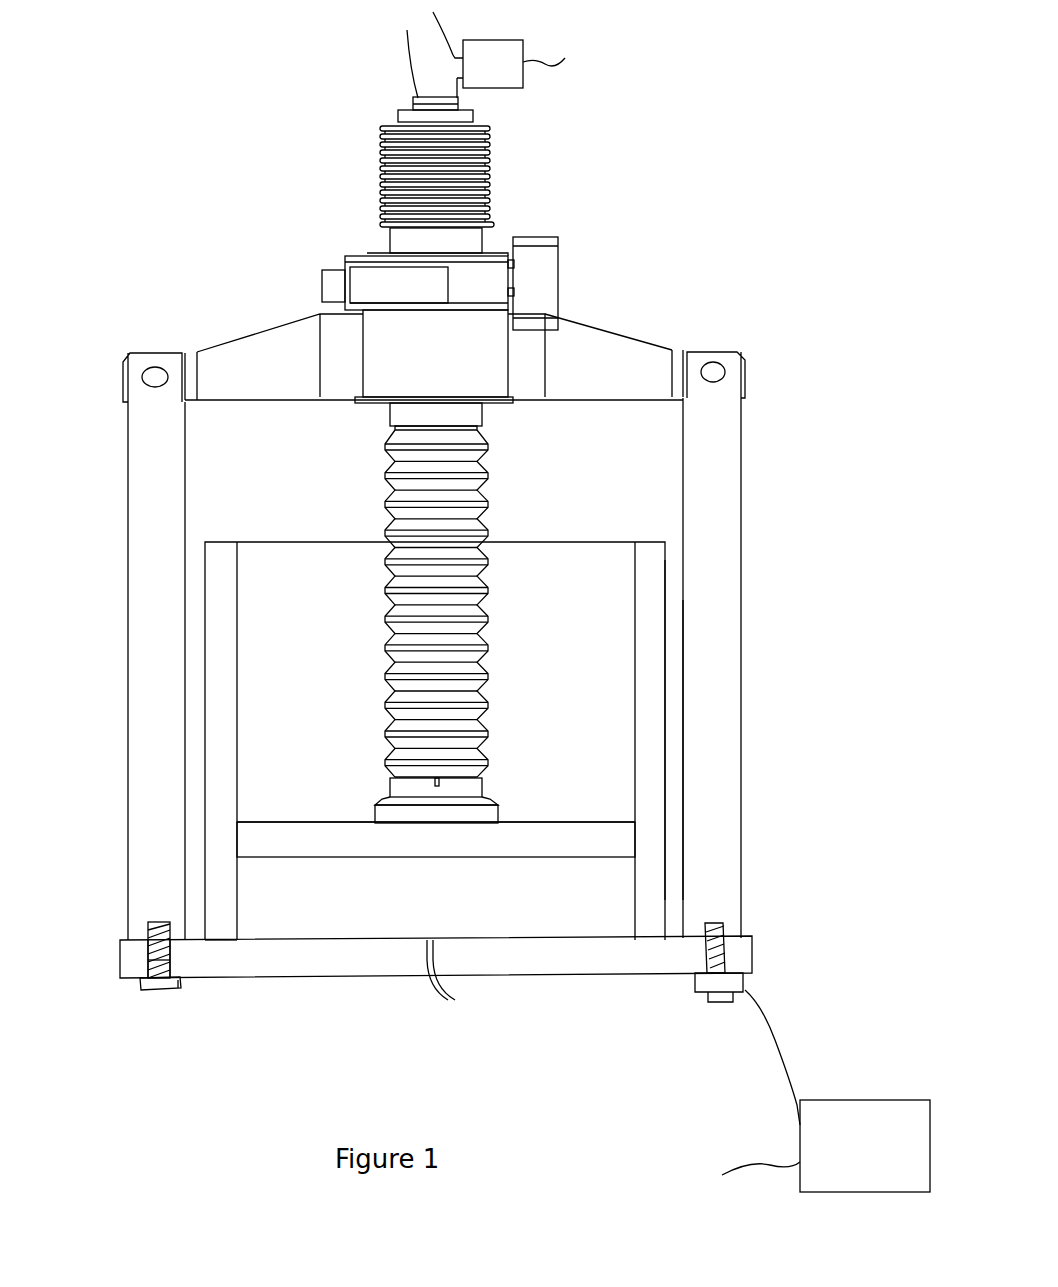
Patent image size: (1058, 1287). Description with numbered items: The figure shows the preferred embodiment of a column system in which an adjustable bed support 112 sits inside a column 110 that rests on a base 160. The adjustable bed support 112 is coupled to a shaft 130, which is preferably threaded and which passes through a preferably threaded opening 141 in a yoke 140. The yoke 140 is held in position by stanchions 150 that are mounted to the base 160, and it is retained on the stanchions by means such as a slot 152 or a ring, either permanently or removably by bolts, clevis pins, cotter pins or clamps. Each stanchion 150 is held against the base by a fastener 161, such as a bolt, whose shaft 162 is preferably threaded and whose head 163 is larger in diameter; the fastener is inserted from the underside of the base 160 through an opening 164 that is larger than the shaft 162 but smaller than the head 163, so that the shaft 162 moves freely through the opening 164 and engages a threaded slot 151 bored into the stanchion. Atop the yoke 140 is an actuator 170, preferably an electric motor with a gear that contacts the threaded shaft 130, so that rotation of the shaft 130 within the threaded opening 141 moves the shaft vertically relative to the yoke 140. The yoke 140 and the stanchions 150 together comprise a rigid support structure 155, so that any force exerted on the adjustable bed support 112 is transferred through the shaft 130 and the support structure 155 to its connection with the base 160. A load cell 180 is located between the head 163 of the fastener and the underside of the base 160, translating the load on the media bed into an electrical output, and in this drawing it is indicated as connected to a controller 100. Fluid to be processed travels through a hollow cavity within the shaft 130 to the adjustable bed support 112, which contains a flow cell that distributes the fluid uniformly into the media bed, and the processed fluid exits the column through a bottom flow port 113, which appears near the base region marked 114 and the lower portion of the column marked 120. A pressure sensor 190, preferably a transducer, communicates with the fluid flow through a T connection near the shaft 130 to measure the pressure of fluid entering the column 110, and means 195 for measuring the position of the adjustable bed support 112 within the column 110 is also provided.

The controller 100 is at (792, 1097).
The column 110 is at (662, 582).
The adjustable bed support 112 is at (530, 836).
The bottom flow port 113 is at (430, 980).
The base plate 114 is at (337, 940).
The platform 120 is at (436, 861).
The shaft 130 is at (487, 687).
The yoke 140 is at (600, 327).
The opening 141 is at (485, 407).
The stanchions 150 is at (127, 527).
The slots 151 is at (148, 935).
The slot 152 is at (742, 356).
The support structure 155 is at (745, 292).
The base 160 is at (625, 975).
The fasteners 161 is at (178, 990).
The shaft 162 is at (150, 950).
The head 163 is at (153, 992).
The openings 164 is at (148, 965).
The actuator 170 is at (558, 272).
The load cell 180 is at (747, 982).
The pressure sensor 190 is at (515, 55).
The means for measuring the position 195 is at (665, 832).